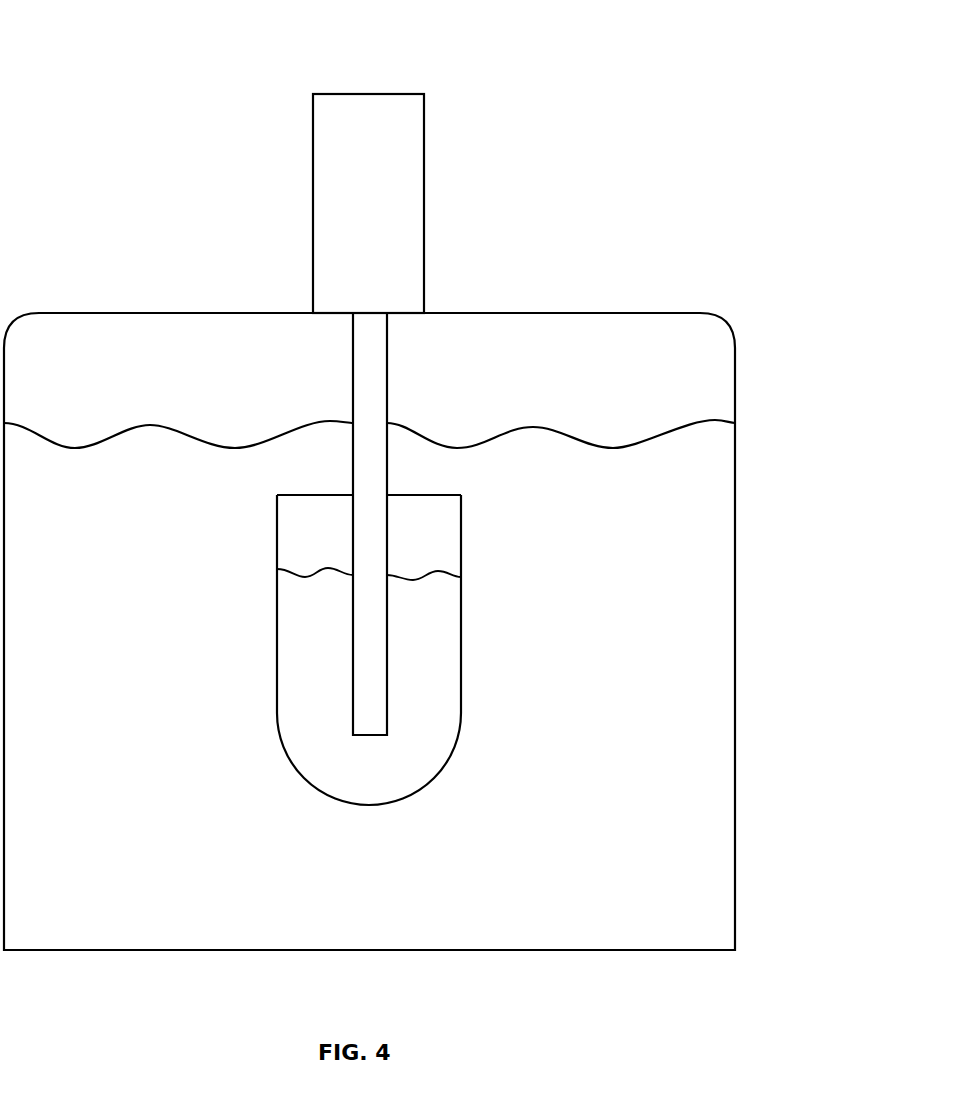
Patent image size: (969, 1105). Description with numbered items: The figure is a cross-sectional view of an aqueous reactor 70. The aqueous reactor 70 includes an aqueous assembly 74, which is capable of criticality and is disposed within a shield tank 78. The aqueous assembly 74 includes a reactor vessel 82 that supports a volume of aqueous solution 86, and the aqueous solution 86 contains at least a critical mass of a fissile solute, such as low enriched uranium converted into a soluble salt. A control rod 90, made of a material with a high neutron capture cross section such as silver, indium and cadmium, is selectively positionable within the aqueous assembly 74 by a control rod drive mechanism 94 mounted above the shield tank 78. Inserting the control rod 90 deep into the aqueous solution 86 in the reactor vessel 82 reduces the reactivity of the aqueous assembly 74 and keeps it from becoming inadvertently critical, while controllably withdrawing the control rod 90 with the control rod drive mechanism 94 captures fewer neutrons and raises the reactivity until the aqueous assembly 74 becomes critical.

The aqueous reactor 70 is at (132, 78).
The aqueous assembly 74 is at (480, 603).
The shield tank 78 is at (735, 600).
The reactor vessel 82 is at (461, 551).
The aqueous solution 86 is at (423, 697).
The control rod 90 is at (362, 687).
The control rod drive mechanism 94 is at (387, 200).